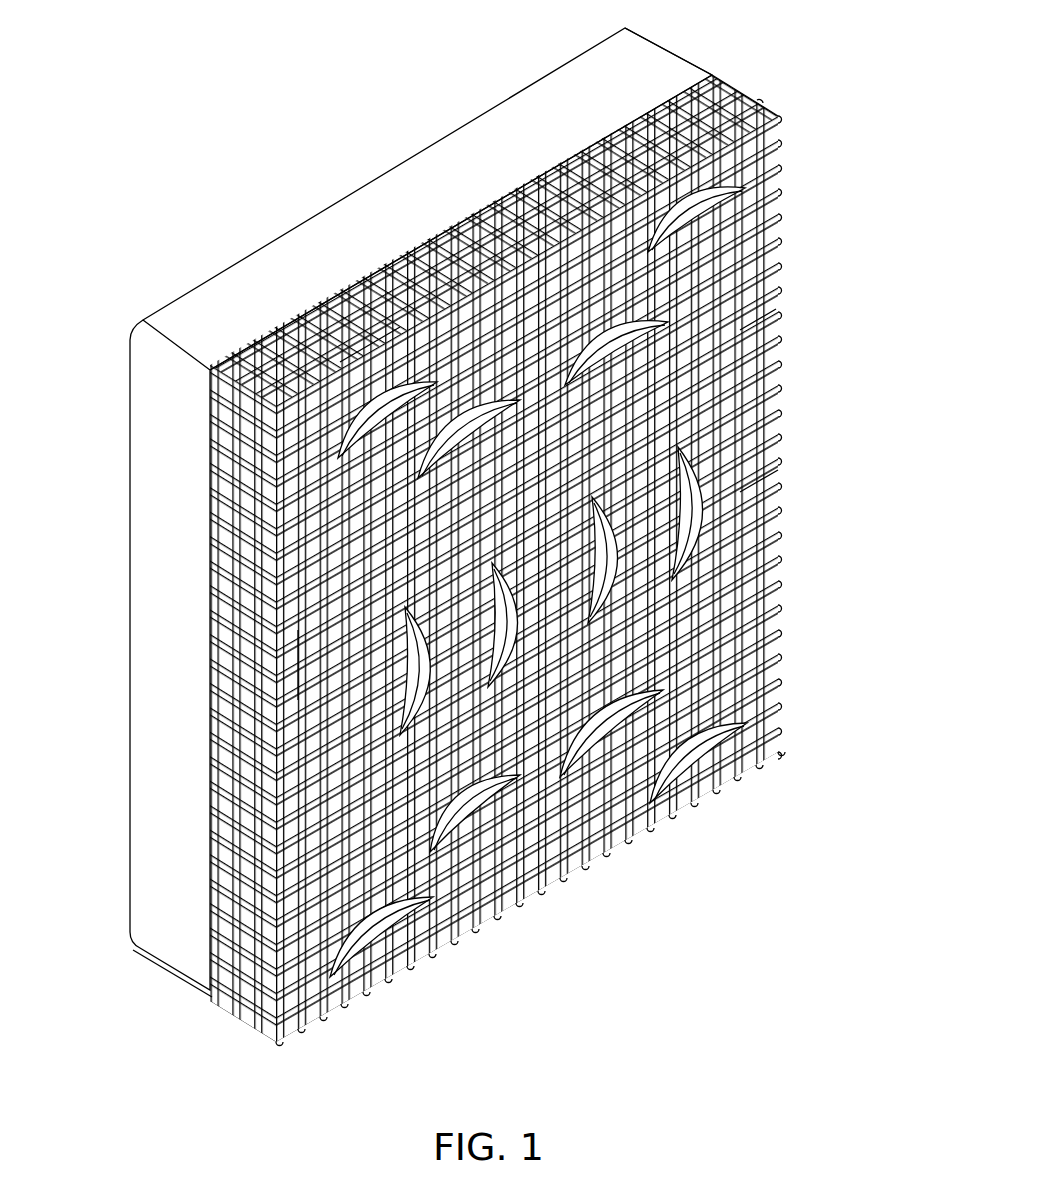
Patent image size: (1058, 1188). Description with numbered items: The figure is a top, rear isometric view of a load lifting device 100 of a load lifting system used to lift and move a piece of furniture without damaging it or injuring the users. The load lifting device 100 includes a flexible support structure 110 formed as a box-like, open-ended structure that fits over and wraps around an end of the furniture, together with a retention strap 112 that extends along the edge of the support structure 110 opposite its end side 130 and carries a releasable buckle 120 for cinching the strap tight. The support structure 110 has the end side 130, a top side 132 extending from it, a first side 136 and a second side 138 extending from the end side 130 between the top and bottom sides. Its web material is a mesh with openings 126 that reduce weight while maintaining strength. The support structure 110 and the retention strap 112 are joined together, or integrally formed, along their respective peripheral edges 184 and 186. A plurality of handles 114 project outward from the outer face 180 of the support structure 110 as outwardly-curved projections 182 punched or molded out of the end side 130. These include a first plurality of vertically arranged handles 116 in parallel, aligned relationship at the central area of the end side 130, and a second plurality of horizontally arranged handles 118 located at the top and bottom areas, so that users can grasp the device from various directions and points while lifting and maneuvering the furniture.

The load lifting device 100 is at (252, 78).
The support structure 110 is at (752, 92).
The retention strap 112 is at (341, 176).
The plurality of handles 114 is at (865, 400).
The first plurality of handles 116 is at (693, 536).
The second plurality of handles 118 is at (719, 244).
The releasable buckle 120 is at (806, 675).
The openings 126 is at (375, 350).
The end side 130 is at (778, 470).
The top side 132 is at (470, 222).
The first side 136 is at (213, 733).
The second side 138 is at (797, 187).
The outer face 180 is at (303, 640).
The outwardly-curved projections 182 is at (645, 378).
The peripheral edge 184 is at (652, 58).
The peripheral edge 186 is at (712, 98).